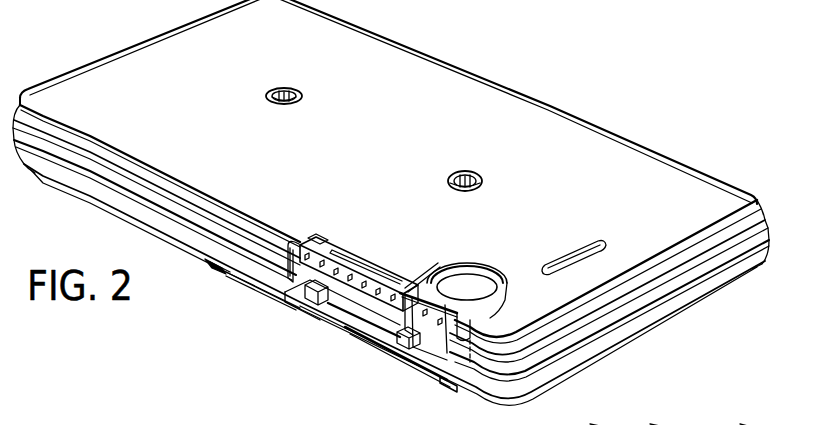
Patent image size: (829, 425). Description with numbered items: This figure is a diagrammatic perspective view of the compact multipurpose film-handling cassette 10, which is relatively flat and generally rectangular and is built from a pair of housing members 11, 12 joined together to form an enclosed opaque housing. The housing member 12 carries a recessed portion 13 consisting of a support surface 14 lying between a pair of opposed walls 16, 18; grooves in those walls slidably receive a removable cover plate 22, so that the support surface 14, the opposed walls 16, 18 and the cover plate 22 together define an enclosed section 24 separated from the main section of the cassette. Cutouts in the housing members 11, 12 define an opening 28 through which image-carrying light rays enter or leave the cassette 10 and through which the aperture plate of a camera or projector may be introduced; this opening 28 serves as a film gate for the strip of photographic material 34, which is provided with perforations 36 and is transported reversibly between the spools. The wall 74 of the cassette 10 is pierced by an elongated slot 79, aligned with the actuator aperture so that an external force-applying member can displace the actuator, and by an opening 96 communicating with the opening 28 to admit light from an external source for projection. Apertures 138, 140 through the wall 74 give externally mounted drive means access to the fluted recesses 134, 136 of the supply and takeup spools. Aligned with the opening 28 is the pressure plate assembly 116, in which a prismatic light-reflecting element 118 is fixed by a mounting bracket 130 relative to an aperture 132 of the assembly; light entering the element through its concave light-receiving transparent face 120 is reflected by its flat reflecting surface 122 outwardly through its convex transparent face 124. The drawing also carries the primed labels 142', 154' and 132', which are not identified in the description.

The film-handling cassette 10 is at (628, 128).
The housing member 11 is at (480, 84).
The housing member 12 is at (612, 349).
The wall 74 is at (518, 100).
The fluted recess 136 is at (292, 88).
The aperture 140 is at (283, 105).
The aperture 138 is at (457, 173).
The fluted recess 134 is at (480, 172).
The elongated slot 79 is at (567, 252).
The perforations 36 is at (302, 243).
The pressure plate assembly 116 is at (358, 260).
The mounting bracket 130 is at (432, 282).
The aperture 132 is at (428, 274).
The light-reflecting element 118 is at (488, 296).
The concave light-receiving transparent face 120 is at (486, 262).
The opening 96 is at (468, 272).
The flat reflecting surface 122 is at (490, 330).
The strip of photographic material 34 is at (345, 290).
The enclosed section 24 is at (346, 340).
The removable cover plate 22 is at (392, 345).
The convex transparent face 124 is at (432, 347).
The opposed wall 18 is at (447, 372).
The opposed wall 16 is at (207, 262).
The recessed portion 13 is at (227, 274).
The support surface 14 is at (253, 287).
The opening 28 is at (285, 300).
The connector 142' is at (757, 410).
The connector 154' is at (660, 412).
The support leg 132' is at (601, 419).